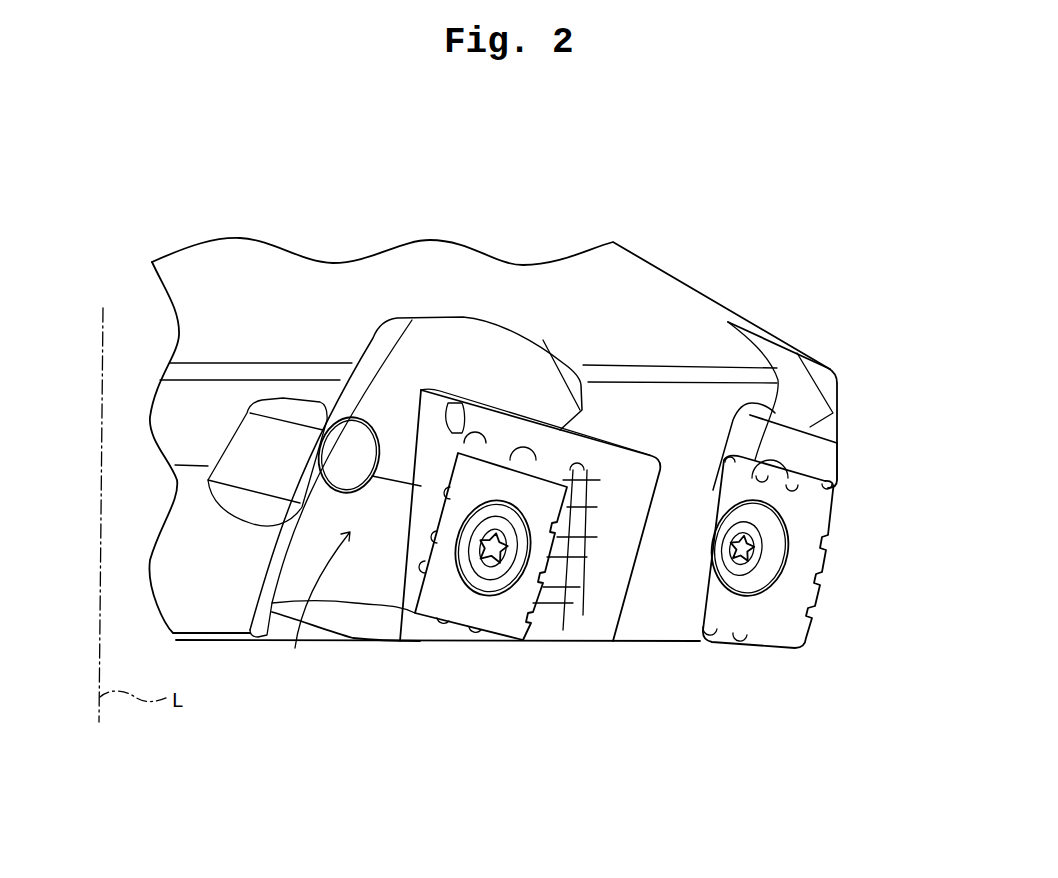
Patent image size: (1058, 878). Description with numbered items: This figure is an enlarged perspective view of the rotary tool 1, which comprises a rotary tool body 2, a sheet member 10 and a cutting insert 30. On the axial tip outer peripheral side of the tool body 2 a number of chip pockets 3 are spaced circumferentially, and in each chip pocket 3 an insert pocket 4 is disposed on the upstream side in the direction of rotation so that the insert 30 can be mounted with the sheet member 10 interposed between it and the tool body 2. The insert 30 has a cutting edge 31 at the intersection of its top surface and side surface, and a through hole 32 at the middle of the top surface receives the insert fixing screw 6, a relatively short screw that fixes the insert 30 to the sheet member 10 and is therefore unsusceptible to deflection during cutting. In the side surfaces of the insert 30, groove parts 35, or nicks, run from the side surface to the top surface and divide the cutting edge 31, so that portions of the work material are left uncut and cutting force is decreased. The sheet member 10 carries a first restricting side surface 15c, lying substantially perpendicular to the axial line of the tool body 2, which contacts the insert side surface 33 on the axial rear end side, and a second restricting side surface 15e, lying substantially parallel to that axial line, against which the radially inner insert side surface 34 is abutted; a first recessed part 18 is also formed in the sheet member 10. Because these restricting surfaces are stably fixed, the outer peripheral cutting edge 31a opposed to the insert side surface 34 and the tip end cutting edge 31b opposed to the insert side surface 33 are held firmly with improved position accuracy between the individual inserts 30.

The rotary tool 1 is at (313, 237).
The rotary tool body 2 is at (653, 292).
The chip pocket 3 is at (338, 495).
The insert pocket 4 is at (625, 535).
The insert fixing screw 6 is at (499, 578).
The sheet member 10 is at (587, 617).
The first restricting side surface 15c is at (545, 455).
The second restricting side surface 15e is at (398, 612).
The first recessed part 18 is at (508, 455).
The cutting insert 30 is at (455, 618).
The cutting edge 31 is at (530, 565).
The outer peripheral cutting edge 31a is at (543, 600).
The tip end cutting edge 31b is at (458, 630).
The through hole 32 is at (462, 608).
The insert side surface 33 is at (613, 618).
The insert side surface 34 is at (388, 601).
The groove part 35 is at (557, 590).